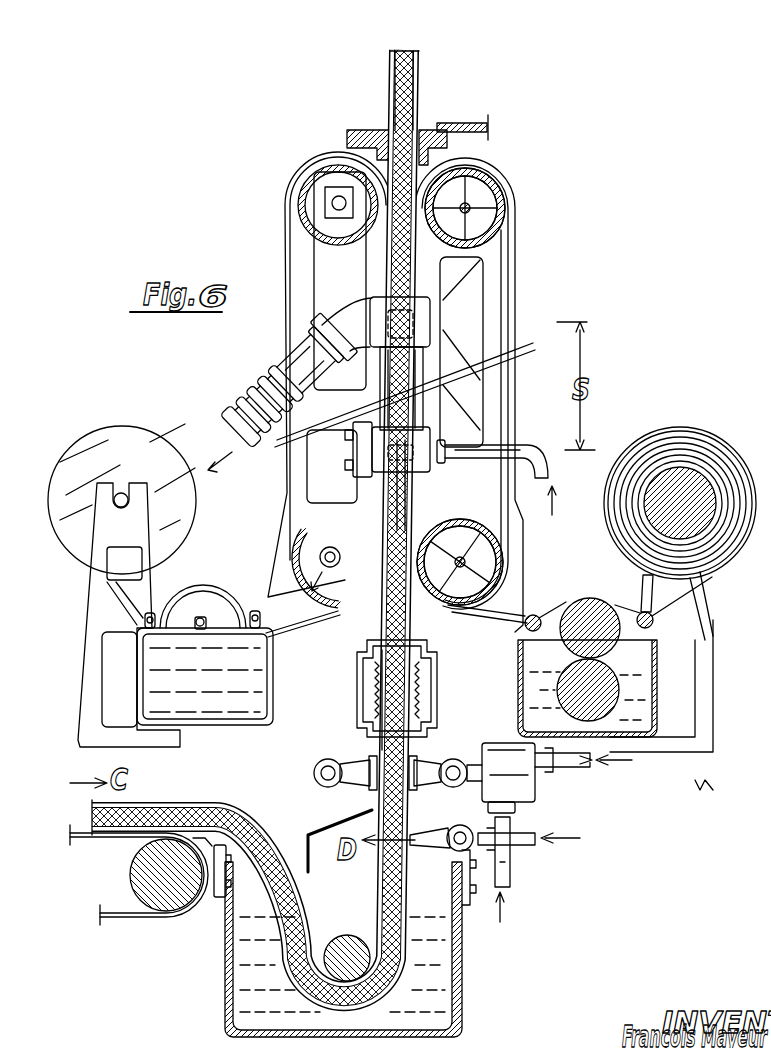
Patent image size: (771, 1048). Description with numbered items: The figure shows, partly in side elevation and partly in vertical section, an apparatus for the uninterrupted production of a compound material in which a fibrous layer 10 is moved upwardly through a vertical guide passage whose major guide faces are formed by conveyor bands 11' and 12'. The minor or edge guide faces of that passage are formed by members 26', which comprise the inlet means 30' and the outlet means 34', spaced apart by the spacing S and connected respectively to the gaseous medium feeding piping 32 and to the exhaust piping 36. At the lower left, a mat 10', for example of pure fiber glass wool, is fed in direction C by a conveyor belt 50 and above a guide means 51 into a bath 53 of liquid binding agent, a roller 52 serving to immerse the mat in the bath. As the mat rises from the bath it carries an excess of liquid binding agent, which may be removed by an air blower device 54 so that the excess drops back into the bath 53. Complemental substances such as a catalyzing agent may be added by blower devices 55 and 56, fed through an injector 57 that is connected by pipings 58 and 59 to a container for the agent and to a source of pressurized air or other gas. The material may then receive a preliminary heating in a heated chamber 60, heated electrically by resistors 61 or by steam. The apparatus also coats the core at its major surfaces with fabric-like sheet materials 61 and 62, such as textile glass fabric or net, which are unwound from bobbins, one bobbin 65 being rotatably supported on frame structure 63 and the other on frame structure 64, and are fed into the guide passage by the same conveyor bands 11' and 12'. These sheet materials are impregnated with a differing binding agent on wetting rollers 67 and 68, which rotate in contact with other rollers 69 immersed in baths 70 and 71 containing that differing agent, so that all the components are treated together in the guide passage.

The fibrous layer 10 is at (248, 523).
The mat 10' is at (148, 798).
The conveyor band 11' is at (317, 380).
The conveyor band 12' is at (564, 474).
The edge guide members 26' is at (495, 224).
The inlet means 30' is at (372, 457).
The gaseous medium feeding piping 32 is at (535, 450).
The outlet means 34' is at (336, 321).
The exhaust piping 36 is at (262, 402).
The conveyor belt 50 is at (108, 843).
The guide means 51 is at (250, 806).
The roller 52 is at (345, 935).
The bath 53 is at (237, 965).
The air blower device 54 is at (428, 850).
The blower device 55 is at (336, 760).
The blower device 56 is at (453, 758).
The injector 57 is at (525, 785).
The piping 58 is at (512, 870).
The piping 59 is at (580, 766).
The heated chamber 60 is at (437, 700).
The resistors / fabric-like sheet material 61 is at (389, 96).
The fabric-like sheet material 62 is at (419, 101).
The frame structure 63 is at (130, 525).
The frame structure 64 is at (640, 593).
The bobbin 65 is at (125, 445).
The wetting roller 67 is at (215, 600).
The wetting roller 68 is at (578, 605).
The immersed rollers 69 is at (600, 700).
The bath 70 is at (225, 705).
The bath 71 is at (643, 693).